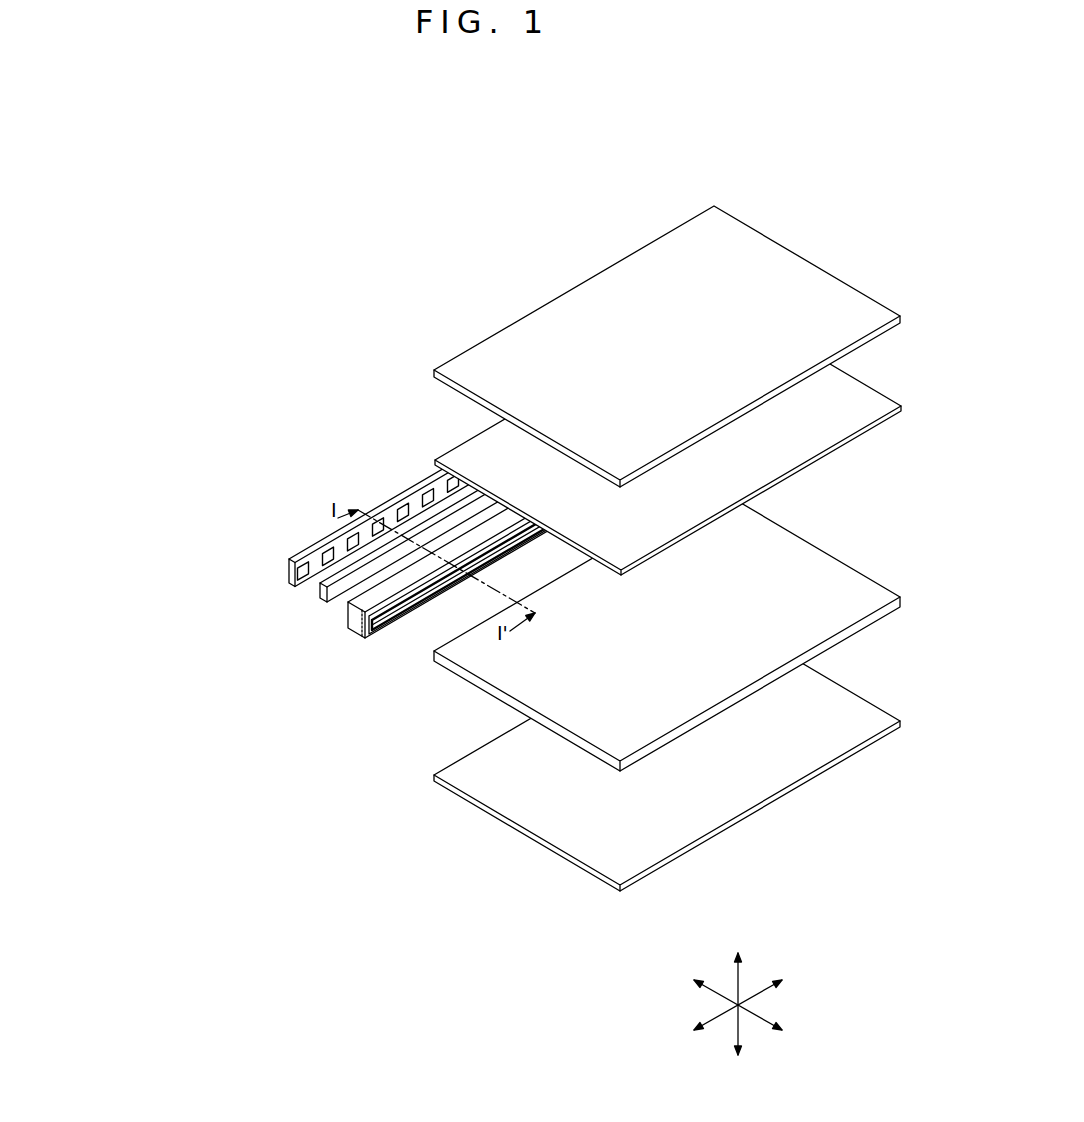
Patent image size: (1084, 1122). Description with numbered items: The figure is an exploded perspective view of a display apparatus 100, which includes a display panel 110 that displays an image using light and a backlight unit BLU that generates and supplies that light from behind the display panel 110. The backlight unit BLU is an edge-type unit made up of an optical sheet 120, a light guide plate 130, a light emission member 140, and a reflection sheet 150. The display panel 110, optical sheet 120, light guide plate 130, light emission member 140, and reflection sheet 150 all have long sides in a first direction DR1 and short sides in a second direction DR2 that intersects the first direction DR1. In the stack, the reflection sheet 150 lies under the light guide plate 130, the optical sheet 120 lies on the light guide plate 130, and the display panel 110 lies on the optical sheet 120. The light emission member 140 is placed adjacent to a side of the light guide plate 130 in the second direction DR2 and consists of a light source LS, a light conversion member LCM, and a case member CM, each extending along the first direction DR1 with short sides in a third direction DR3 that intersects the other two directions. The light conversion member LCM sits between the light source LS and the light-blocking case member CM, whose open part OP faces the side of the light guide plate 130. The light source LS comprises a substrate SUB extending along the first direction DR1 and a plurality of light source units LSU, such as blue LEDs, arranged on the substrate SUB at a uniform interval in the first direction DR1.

The display apparatus 100 is at (592, 209).
The display panel 110 is at (485, 357).
The optical sheet 120 is at (468, 457).
The light guide plate 130 is at (434, 655).
The light emission member 140 is at (156, 542).
The reflection sheet 150 is at (467, 772).
The backlight unit BLU is at (106, 447).
The light source LS is at (203, 527).
The light source unit LSU is at (330, 552).
The substrate SUB is at (289, 573).
The light conversion member LCM is at (320, 590).
The case member CM is at (348, 614).
The open part OP is at (378, 615).
The first direction DR1 is at (761, 996).
The second direction DR2 is at (761, 1014).
The third direction DR3 is at (742, 992).